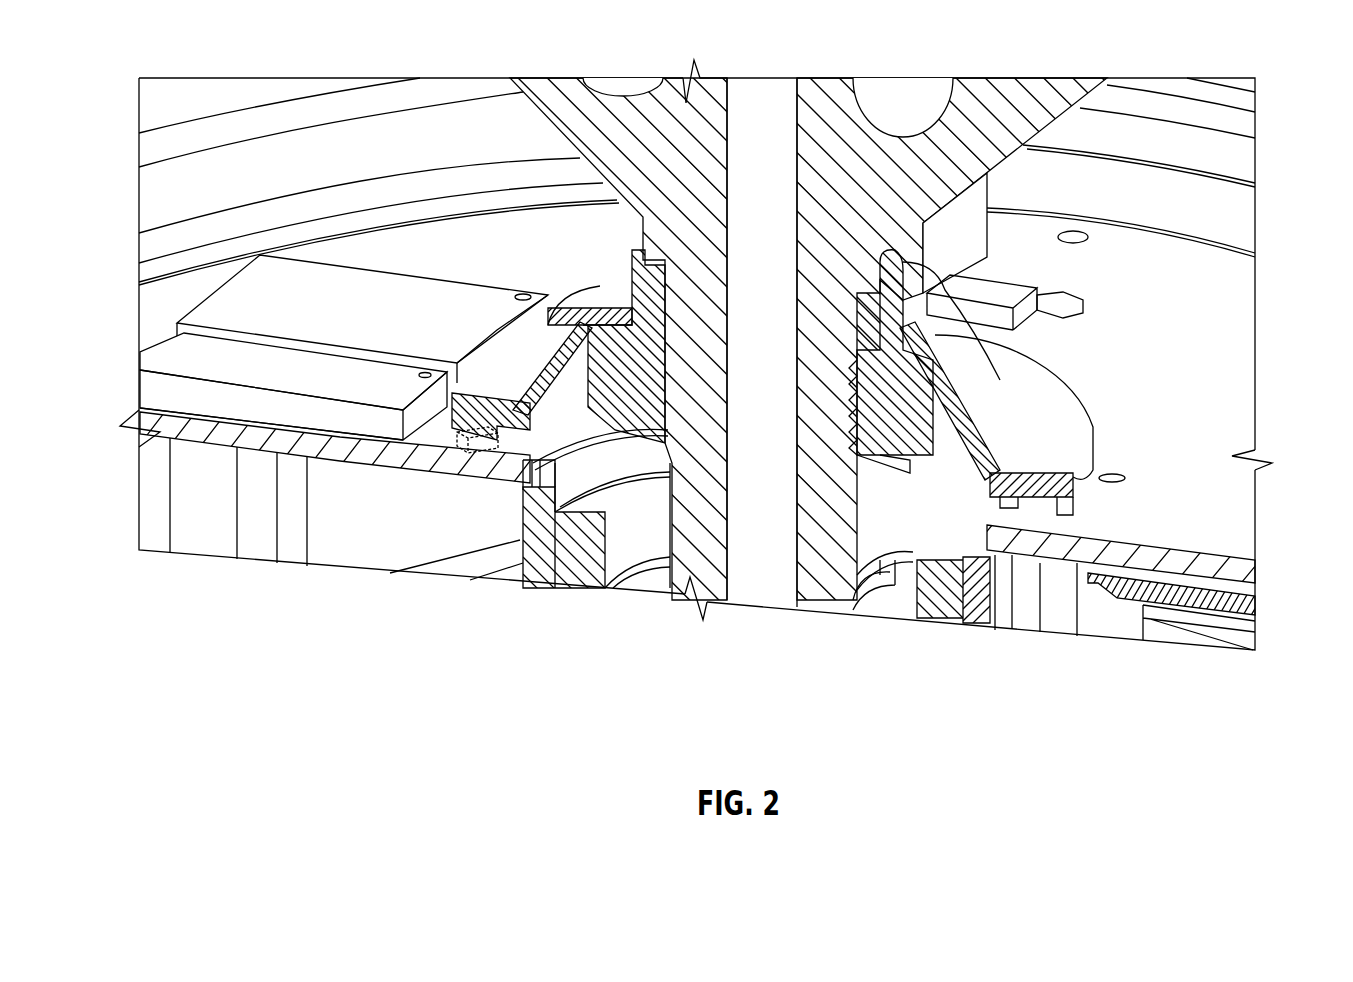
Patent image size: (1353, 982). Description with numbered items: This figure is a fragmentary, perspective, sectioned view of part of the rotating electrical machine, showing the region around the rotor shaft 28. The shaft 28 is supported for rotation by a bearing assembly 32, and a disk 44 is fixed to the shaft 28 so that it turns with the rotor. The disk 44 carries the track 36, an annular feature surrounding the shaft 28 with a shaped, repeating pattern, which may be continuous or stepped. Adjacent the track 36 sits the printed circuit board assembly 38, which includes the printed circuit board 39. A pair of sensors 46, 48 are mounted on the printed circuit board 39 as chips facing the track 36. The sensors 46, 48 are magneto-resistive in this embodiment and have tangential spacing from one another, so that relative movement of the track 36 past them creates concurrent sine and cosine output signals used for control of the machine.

The shaft 28 is at (810, 603).
The bearing assembly 32 is at (873, 609).
The track 36 is at (1073, 509).
The printed circuit board assembly (PCBA) 38 is at (433, 434).
The printed circuit board 39 is at (1248, 572).
The disk 44 is at (1072, 447).
The sensor 46 is at (470, 455).
The sensor 48 is at (497, 420).